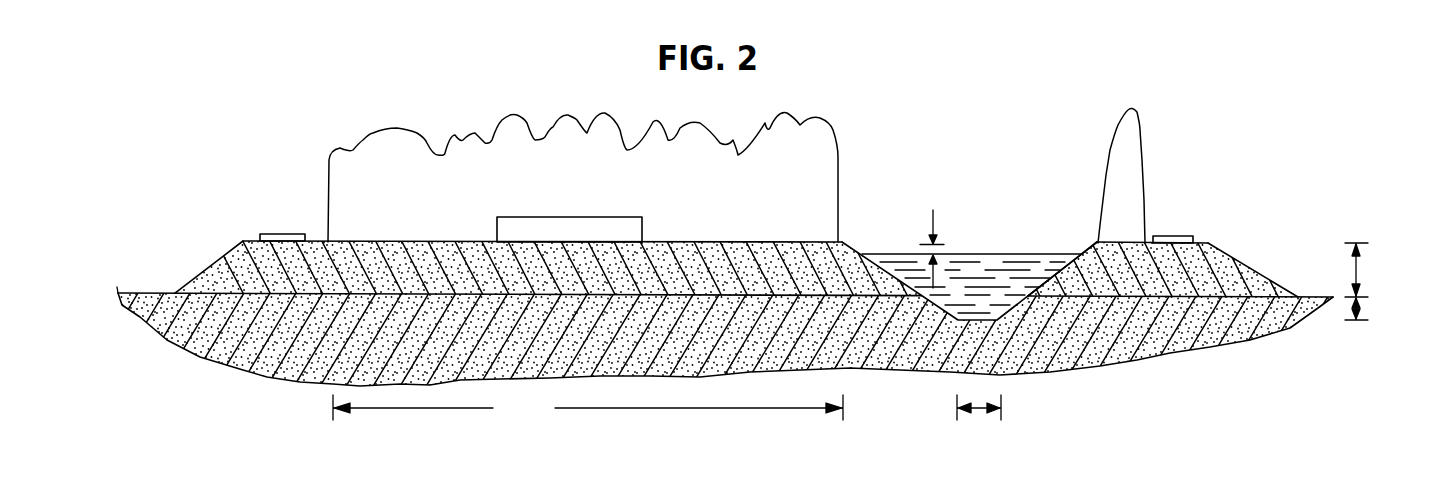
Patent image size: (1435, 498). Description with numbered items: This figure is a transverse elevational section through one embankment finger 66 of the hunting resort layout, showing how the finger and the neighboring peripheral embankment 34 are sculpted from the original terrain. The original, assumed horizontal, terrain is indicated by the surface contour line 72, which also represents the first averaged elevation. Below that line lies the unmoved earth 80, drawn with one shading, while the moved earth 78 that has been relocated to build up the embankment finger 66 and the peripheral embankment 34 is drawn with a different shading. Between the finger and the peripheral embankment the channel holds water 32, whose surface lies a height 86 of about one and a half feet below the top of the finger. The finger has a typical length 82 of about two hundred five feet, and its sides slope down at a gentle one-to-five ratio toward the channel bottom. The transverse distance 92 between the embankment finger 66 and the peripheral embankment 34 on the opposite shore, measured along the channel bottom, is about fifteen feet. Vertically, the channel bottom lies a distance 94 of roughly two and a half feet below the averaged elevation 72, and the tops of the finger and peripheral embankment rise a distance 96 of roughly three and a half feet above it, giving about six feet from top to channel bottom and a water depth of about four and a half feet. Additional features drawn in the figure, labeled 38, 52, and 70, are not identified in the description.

The water 32 is at (983, 253).
The peripheral embankment 34 is at (1230, 254).
The die 38 is at (631, 217).
The bond pad 52 is at (277, 232).
The embankment finger 66 is at (763, 242).
The residue 70 is at (805, 153).
The surface contour line 72 is at (1323, 296).
The moved earth 78 is at (221, 273).
The unmoved earth 80 is at (244, 357).
The length of embankment finger 82 is at (588, 407).
The height of embankment finger top above water 86 is at (941, 246).
The transverse distance 92 is at (978, 410).
The distance of channel bottom below averaged elevation 94 is at (1357, 307).
The distance of embankment top above averaged elevation 96 is at (1357, 268).